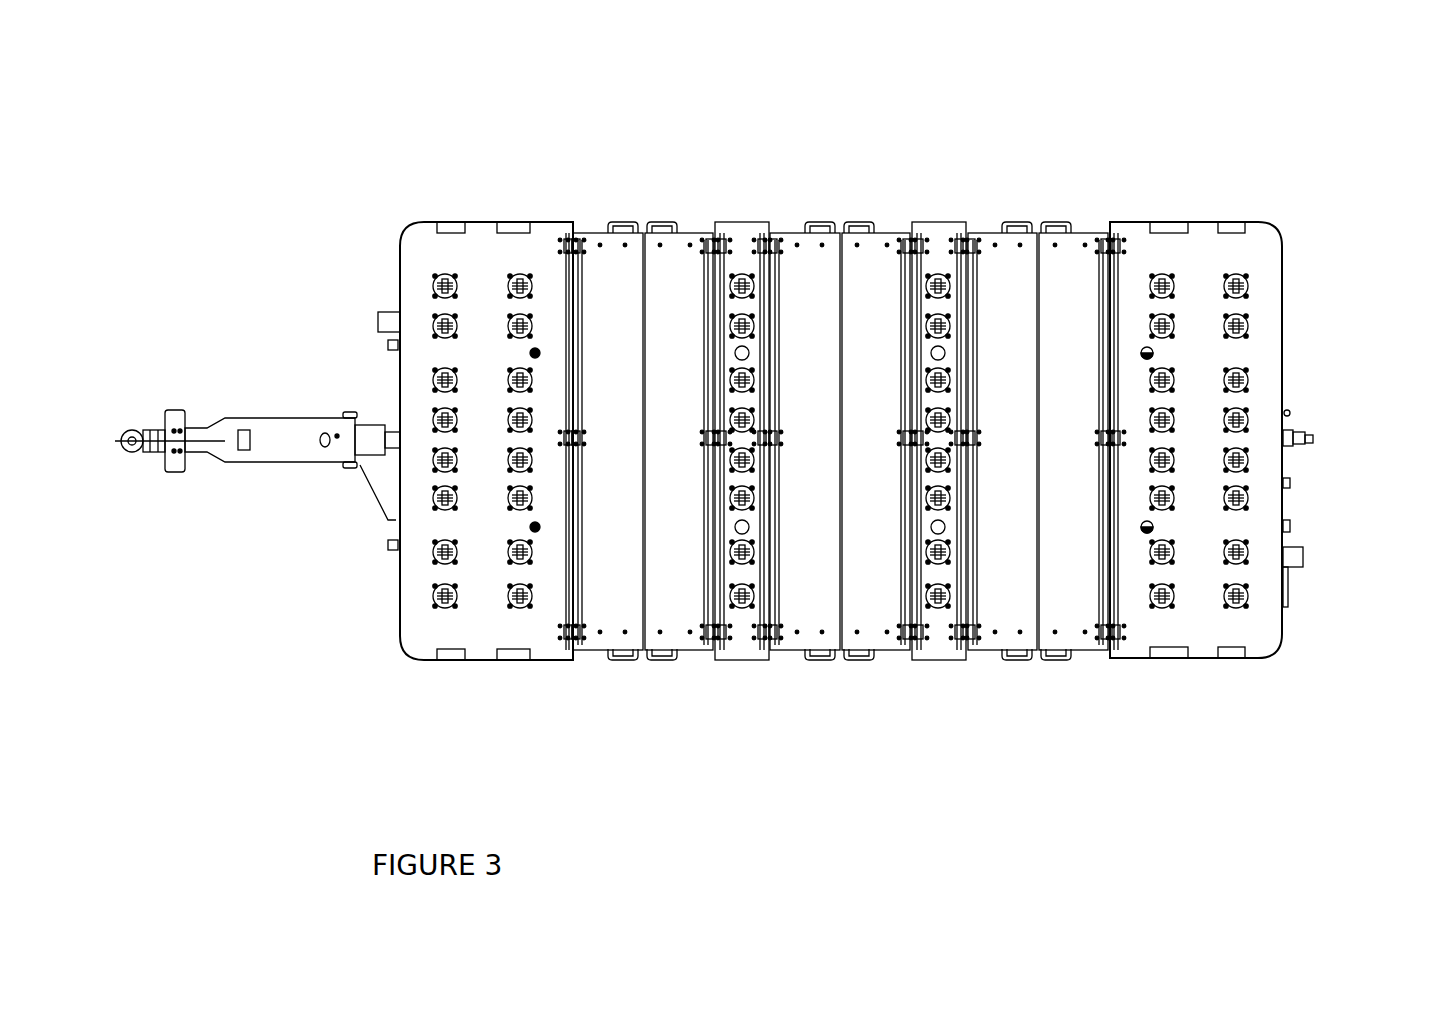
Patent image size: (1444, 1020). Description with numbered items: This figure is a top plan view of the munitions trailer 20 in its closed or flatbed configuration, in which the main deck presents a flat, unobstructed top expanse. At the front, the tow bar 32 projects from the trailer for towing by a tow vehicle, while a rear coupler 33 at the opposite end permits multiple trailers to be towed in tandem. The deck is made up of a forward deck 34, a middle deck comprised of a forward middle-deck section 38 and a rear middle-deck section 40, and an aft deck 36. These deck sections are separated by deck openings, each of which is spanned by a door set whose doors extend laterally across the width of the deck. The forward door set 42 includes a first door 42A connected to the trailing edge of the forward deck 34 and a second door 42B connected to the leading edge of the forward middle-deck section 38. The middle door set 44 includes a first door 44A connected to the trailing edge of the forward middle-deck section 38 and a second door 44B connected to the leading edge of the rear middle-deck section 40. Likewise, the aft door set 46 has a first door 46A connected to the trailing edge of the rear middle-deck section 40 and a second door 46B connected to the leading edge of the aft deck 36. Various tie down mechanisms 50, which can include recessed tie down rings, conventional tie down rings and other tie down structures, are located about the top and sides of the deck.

The munitions trailer 20 is at (443, 172).
The tow bar 32 is at (270, 425).
The rear coupler 33 is at (1312, 432).
The forward deck 34 is at (427, 635).
The aft deck 36 is at (1278, 655).
The forward middle-deck section 38 is at (743, 645).
The rear middle-deck section 40 is at (942, 647).
The forward door set 42 is at (708, 215).
The first door 42A is at (611, 628).
The second door 42B is at (681, 628).
The middle door set 44 is at (900, 215).
The first door 44A is at (805, 620).
The second door 44B is at (881, 630).
The aft door set 46 is at (1100, 215).
The first door 46A is at (999, 628).
The second door 46B is at (1077, 628).
The tie down mechanisms 50 is at (435, 280).